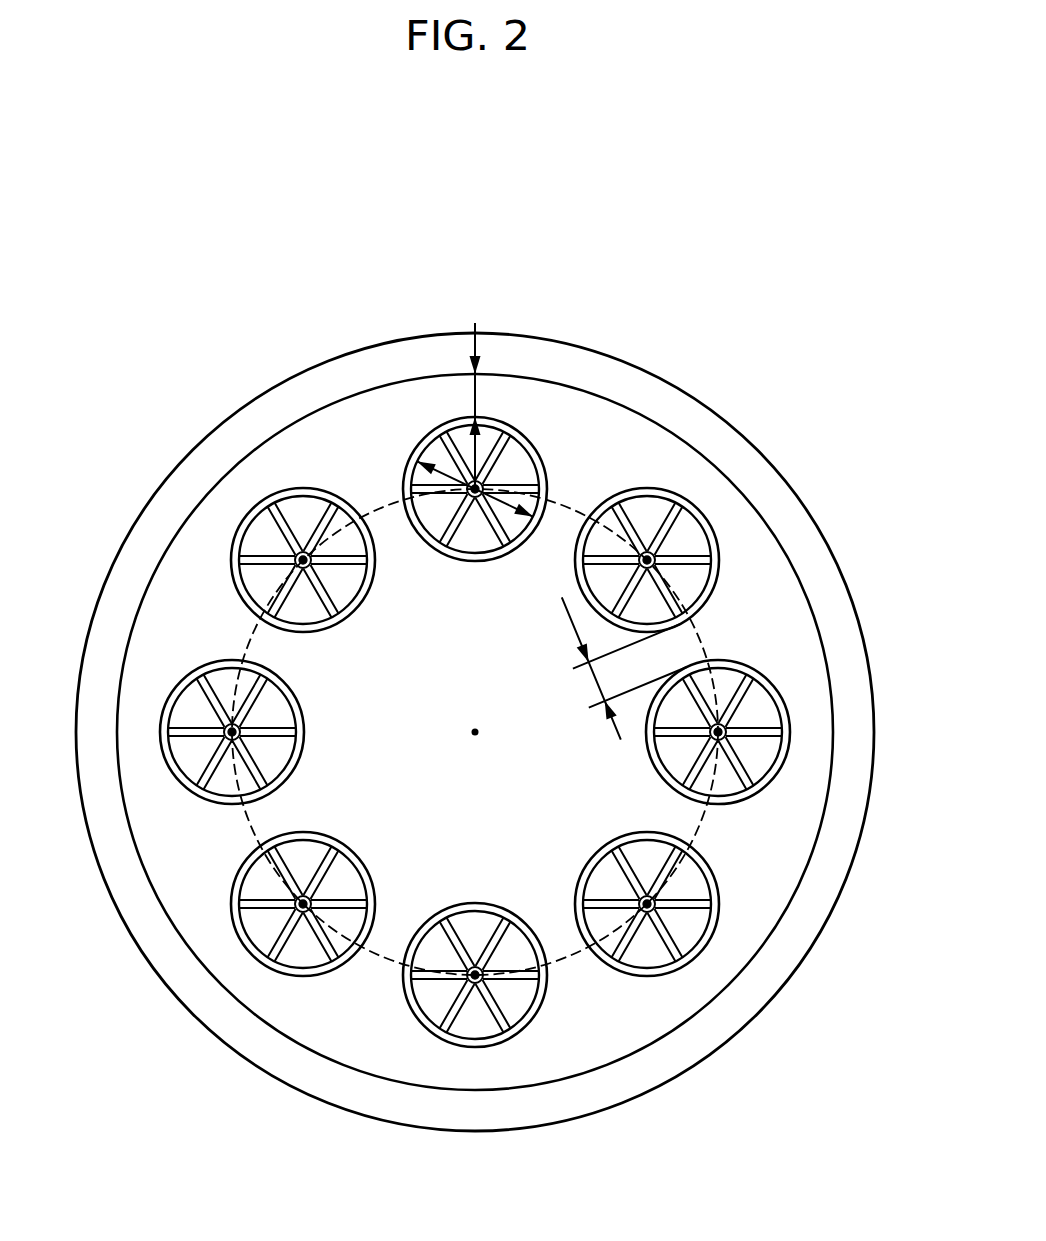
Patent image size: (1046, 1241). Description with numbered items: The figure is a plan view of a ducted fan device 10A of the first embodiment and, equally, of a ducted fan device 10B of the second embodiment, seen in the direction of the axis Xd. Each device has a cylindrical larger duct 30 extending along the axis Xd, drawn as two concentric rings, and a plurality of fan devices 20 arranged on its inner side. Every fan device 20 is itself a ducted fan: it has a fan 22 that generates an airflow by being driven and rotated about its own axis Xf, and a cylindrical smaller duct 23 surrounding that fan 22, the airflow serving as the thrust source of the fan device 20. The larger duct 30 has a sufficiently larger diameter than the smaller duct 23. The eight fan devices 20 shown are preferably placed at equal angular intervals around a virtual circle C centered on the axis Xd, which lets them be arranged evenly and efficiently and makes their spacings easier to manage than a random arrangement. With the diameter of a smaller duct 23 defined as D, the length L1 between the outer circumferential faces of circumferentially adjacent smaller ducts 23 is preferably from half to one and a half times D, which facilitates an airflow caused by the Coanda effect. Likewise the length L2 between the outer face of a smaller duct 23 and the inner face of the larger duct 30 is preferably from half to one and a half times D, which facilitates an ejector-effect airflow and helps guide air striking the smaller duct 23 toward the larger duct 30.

The ducted fan device 10A is at (500, 634).
The ducted fan device 10B is at (476, 232).
The fan device 20 is at (800, 732).
The fan 22 is at (763, 738).
The smaller duct 23 is at (730, 661).
The larger duct 30 is at (272, 387).
The virtual circle C is at (565, 508).
The diameter of the smaller duct D is at (475, 478).
The length between outer circumferential faces of adjacent smaller ducts L1 is at (608, 668).
The length between smaller duct and larger duct L2 is at (492, 406).
The axis of the larger duct Xd is at (470, 732).
The axis of the fan Xf is at (724, 730).